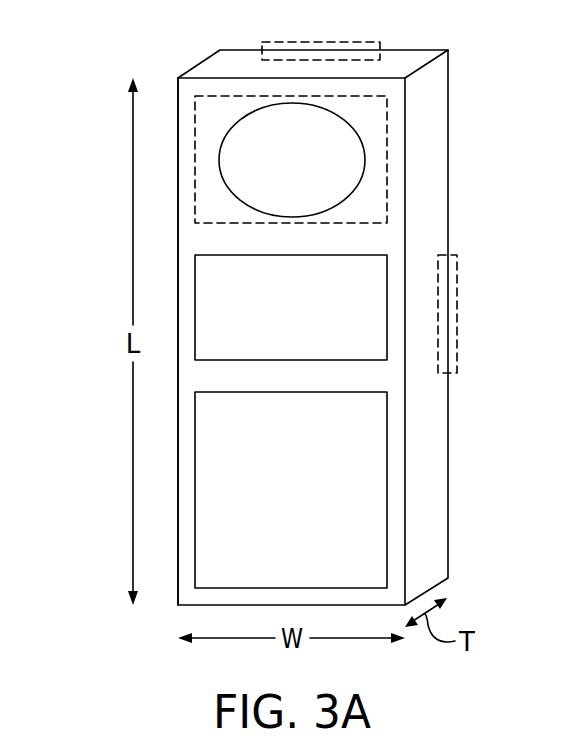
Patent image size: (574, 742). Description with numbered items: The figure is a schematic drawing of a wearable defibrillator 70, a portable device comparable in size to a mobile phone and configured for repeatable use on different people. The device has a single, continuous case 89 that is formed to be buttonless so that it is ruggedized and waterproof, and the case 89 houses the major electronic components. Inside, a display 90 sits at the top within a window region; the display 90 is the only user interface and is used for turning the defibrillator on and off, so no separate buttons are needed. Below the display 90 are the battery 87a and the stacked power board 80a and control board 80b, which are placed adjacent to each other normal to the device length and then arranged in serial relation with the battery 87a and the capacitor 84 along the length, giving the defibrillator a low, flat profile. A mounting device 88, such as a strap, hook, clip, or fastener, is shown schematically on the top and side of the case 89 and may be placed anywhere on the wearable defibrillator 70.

The wearable defibrillator 70 is at (172, 58).
The case 89 is at (178, 151).
The capacitor 84 is at (195, 203).
The display 90 is at (278, 199).
The battery 87a is at (312, 341).
The power board 80a is at (291, 490).
The control board 80b is at (335, 573).
The mounting device 88 is at (372, 60).